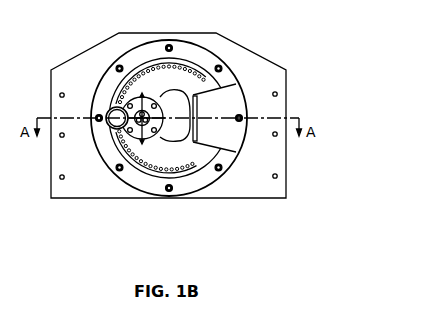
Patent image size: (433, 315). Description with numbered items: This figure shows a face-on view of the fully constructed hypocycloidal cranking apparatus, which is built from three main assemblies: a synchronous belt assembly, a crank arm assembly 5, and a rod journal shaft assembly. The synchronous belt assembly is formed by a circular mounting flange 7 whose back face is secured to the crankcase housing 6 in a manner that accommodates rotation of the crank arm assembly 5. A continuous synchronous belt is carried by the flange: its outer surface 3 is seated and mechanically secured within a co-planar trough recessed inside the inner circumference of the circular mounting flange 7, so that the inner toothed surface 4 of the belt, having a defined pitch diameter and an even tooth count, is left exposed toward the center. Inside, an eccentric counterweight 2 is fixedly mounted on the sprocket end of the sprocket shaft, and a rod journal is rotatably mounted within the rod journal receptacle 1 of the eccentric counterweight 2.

The rod journal receptacle 1 is at (112, 123).
The eccentric counterweight 2 is at (141, 120).
The outer surface 3 is at (188, 169).
The inner toothed surface 4 is at (200, 160).
The crank arm assembly 5 is at (244, 128).
The crankcase housing 6 is at (253, 70).
The circular mounting flange 7 is at (200, 51).